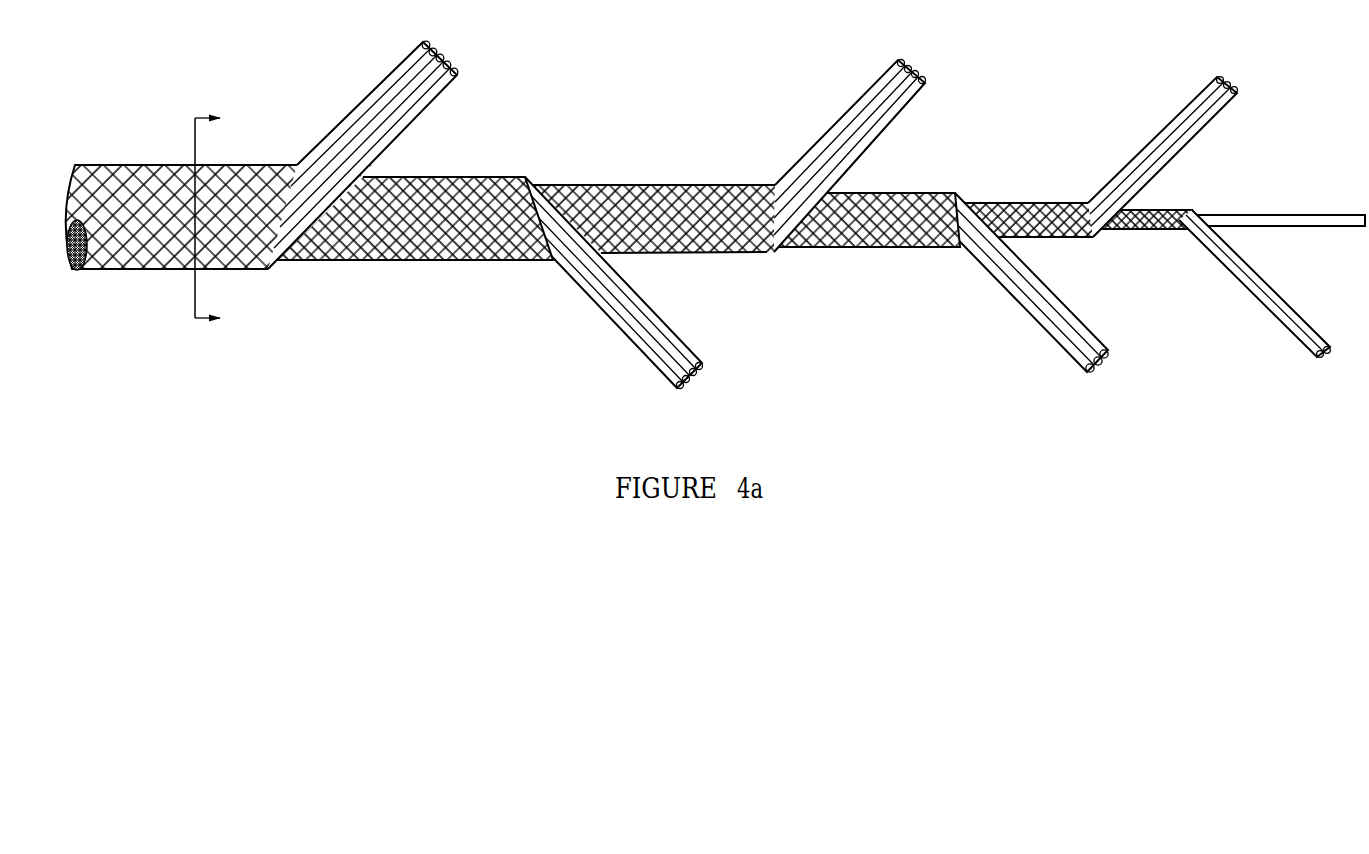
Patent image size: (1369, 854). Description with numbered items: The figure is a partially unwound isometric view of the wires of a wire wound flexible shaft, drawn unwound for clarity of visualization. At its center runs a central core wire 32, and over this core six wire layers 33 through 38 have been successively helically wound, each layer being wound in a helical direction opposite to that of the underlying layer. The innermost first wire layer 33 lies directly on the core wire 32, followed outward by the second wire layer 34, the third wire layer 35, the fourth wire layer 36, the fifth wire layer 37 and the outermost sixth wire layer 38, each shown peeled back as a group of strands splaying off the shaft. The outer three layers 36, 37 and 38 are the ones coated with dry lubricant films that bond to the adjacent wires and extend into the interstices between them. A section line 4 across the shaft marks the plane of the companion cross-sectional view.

The central core wire 32 is at (1283, 213).
The first wire layer 33 is at (1160, 240).
The second wire layer 34 is at (1045, 201).
The third wire layer 35 is at (885, 255).
The fourth wire layer 36 is at (675, 183).
The fifth wire layer 37 is at (432, 263).
The sixth wire layer 38 is at (125, 162).
The section line 4 is at (221, 219).